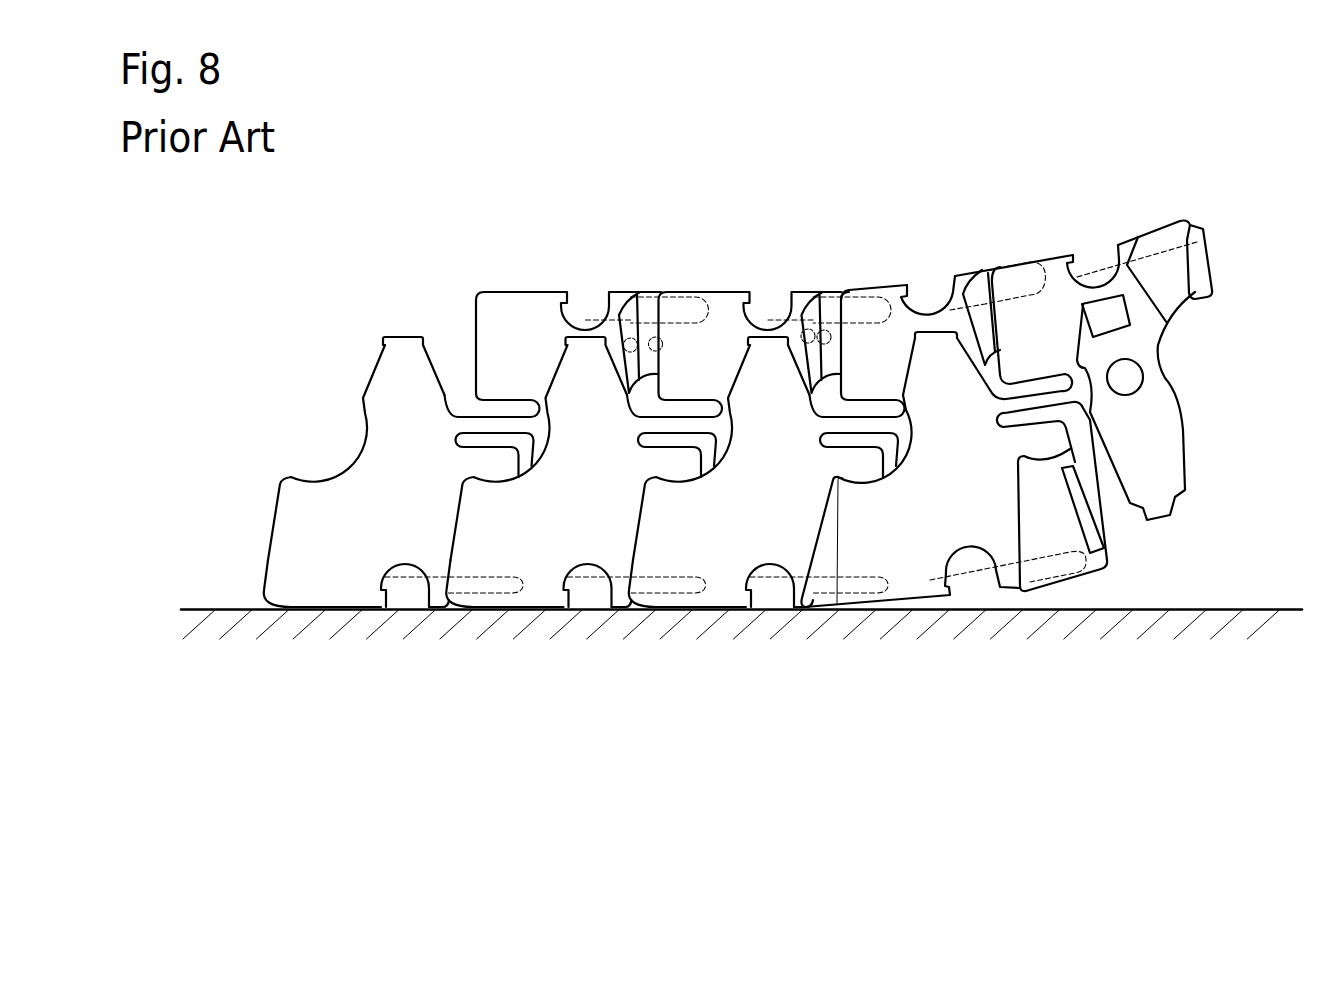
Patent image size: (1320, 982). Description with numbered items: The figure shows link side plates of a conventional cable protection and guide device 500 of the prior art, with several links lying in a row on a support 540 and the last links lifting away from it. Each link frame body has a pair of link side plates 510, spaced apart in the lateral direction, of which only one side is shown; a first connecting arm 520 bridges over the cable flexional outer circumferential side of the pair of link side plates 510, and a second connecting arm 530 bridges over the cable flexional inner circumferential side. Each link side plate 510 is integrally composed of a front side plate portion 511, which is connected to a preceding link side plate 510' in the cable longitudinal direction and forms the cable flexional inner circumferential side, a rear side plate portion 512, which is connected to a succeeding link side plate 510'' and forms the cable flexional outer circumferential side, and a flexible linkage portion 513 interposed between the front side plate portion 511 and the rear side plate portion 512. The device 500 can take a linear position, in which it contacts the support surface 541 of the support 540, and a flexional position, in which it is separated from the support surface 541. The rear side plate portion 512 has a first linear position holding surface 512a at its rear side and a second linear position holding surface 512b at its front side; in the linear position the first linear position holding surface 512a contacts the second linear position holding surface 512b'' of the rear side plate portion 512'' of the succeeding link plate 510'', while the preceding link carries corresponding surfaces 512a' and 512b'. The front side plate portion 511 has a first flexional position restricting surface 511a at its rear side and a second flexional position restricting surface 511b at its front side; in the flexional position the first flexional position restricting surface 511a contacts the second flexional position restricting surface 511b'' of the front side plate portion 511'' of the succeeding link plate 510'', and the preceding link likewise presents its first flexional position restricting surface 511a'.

The cable protection and guide device 500 is at (348, 137).
The link side plate 510 is at (624, 439).
The preceding link side plate 510' is at (833, 449).
The succeeding link side plate 510'' is at (462, 400).
The front side plate portion 511 is at (714, 312).
The front side plate portion of succeeding link plate 511'' is at (558, 318).
The first flexional position restricting surface 511a is at (678, 349).
The first flexional position restricting surface of preceding link plate 511a' is at (852, 339).
The second flexional position restricting surface 511b is at (791, 351).
The second flexional position restricting surface of succeeding link plate 511b'' is at (611, 367).
The rear side plate portion 512 is at (556, 456).
The rear side plate portion of succeeding link plate 512'' is at (409, 472).
The first linear position holding surface 512a is at (485, 629).
The first linear position holding surface of preceding link plate 512a' is at (647, 545).
The second linear position holding surface 512b is at (637, 649).
The second linear position holding surface of preceding link plate 512b' is at (817, 649).
The second linear position holding surface of succeeding link plate 512b'' is at (491, 564).
The linkage portion 513 is at (668, 408).
The first connecting arm 520 is at (769, 582).
The second connecting arm 530 is at (934, 285).
The support 540 is at (1243, 586).
The support surface 541 is at (1186, 607).